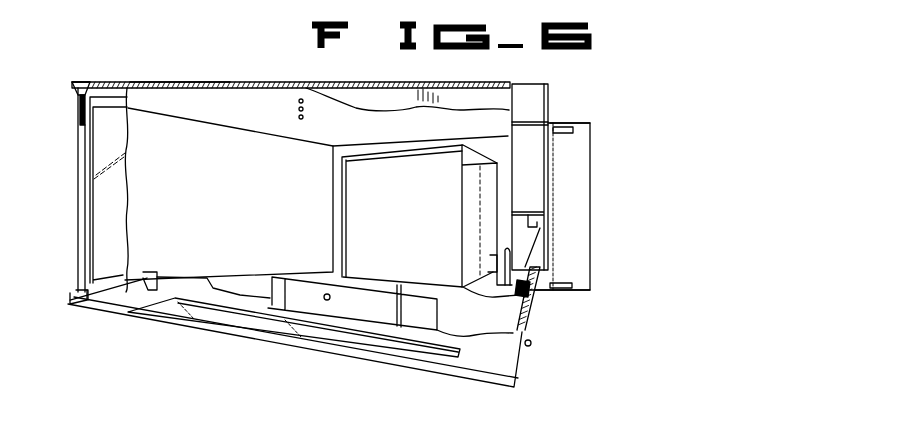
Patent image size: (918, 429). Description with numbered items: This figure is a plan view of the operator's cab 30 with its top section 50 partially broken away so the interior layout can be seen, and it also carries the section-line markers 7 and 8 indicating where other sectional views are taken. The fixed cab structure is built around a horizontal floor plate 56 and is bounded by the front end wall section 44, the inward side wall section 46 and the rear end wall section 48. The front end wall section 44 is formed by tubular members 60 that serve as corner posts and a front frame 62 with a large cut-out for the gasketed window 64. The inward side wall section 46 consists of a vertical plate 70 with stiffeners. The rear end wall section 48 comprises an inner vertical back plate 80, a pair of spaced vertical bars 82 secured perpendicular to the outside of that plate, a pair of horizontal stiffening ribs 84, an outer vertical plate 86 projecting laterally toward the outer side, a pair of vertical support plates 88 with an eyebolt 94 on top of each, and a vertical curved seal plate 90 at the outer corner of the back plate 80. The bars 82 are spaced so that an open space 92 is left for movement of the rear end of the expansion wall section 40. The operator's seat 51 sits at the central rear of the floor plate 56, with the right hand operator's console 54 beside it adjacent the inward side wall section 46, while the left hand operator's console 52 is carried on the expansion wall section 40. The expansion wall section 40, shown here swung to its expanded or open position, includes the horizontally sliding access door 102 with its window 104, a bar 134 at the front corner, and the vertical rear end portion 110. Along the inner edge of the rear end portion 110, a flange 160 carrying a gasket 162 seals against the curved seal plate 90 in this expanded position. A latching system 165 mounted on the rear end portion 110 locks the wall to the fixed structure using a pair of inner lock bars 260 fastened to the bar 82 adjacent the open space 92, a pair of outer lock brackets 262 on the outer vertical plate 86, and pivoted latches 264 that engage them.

The cab 30 is at (602, 98).
The expansion wall section 40 is at (428, 375).
The front end wall section 44 is at (80, 171).
The inward side wall section 46 is at (518, 86).
The rear end wall section 48 is at (555, 179).
The top section 50 is at (497, 90).
The seat 51 is at (406, 211).
The left hand operator's console 52 is at (386, 314).
The right hand operator's console 54 is at (258, 113).
The horizontal floor plate 56 is at (251, 208).
The tubular members 60 is at (116, 84).
The front frame 62 is at (95, 97).
The window 64 is at (102, 135).
The vertical plate 70 is at (170, 84).
The inner vertical back plate 80 is at (505, 129).
The spaced vertical bars 82 is at (534, 124).
The horizontal stiffening ribs 84 is at (540, 237).
The outer vertical plate 86 is at (548, 151).
The vertical support plates 88 is at (580, 123).
The vertical curved seal plate 90 is at (505, 258).
The open space 92 is at (512, 240).
The eyebolt 94 is at (575, 131).
The horizontally sliding access door 102 is at (355, 362).
The window 104 is at (175, 316).
The vertical rear end portion 110 is at (530, 330).
The bar 134 is at (92, 292).
The flange 160 is at (508, 266).
The gasket 162 is at (503, 268).
The latching system 165 is at (519, 288).
The inner lock bars 260 is at (532, 225).
The outer lock brackets 262 is at (540, 291).
The pivoted latches 264 is at (540, 300).
The section line 7- 7 is at (263, 88).
The section line 8- 8 is at (85, 332).